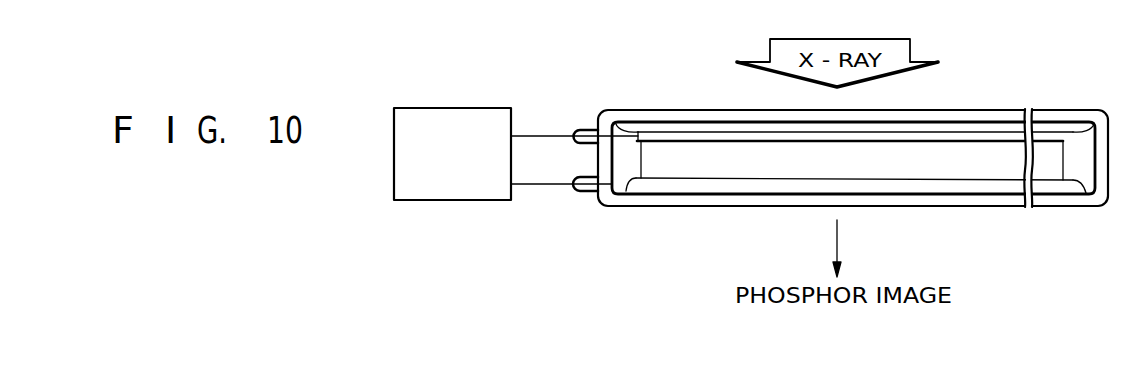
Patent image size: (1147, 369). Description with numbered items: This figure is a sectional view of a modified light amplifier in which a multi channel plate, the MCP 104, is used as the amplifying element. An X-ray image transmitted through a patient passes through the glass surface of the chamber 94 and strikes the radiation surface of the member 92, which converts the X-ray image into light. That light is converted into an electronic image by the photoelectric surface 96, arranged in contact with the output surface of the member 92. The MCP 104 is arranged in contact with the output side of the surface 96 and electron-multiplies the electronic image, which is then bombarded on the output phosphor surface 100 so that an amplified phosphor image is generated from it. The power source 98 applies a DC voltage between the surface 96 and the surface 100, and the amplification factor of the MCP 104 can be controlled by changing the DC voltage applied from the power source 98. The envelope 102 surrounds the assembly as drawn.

The member 92 is at (638, 125).
The chamber 94 is at (617, 198).
The photoelectric surface 96 is at (680, 138).
The power source 98 is at (470, 108).
The output phosphor surface 100 is at (670, 186).
The envelope 102 is at (985, 107).
The MCP (multi channel plate) 104 is at (750, 170).